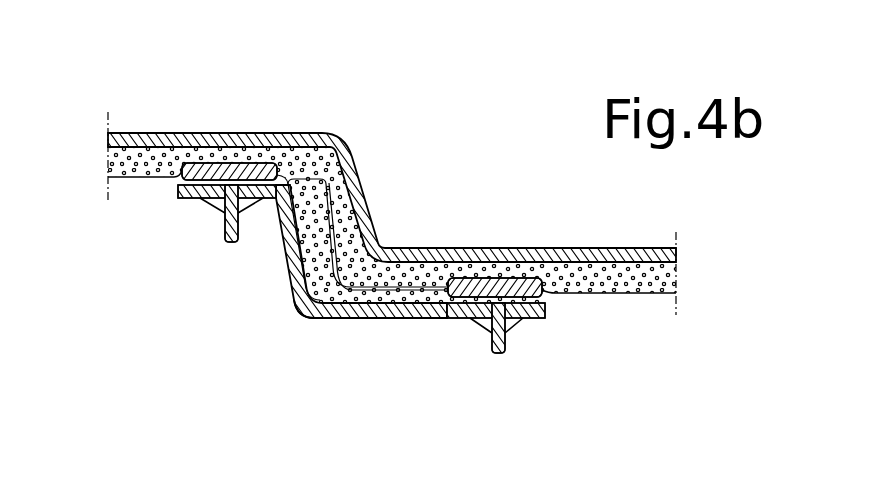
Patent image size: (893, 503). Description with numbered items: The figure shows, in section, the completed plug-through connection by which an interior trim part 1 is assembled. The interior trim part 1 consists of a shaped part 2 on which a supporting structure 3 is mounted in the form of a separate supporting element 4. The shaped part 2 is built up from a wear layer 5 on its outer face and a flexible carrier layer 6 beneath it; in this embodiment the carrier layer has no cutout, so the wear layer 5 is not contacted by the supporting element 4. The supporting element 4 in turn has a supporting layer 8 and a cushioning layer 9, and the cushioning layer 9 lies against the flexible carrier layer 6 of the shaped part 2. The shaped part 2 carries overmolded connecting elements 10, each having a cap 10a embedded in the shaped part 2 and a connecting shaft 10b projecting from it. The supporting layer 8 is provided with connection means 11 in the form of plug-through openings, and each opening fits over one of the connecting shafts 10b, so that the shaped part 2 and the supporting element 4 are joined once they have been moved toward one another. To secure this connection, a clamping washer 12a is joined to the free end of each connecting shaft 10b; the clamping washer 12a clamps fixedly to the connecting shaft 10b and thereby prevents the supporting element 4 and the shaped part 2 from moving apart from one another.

The interior trim part 1 is at (508, 108).
The shaped part 2 is at (382, 160).
The supporting structure 3 is at (255, 352).
The supporting element 4 is at (370, 380).
The wear layer 5 is at (139, 140).
The flexible carrier layer 6 is at (112, 168).
The supporting layer 8 is at (367, 316).
The cushioning layer 9 is at (323, 277).
The connecting element 10 is at (150, 193).
The cap 10a is at (217, 164).
The connecting shaft 10b is at (233, 244).
The connection means 11 is at (165, 215).
The clamping washer 12a is at (213, 204).